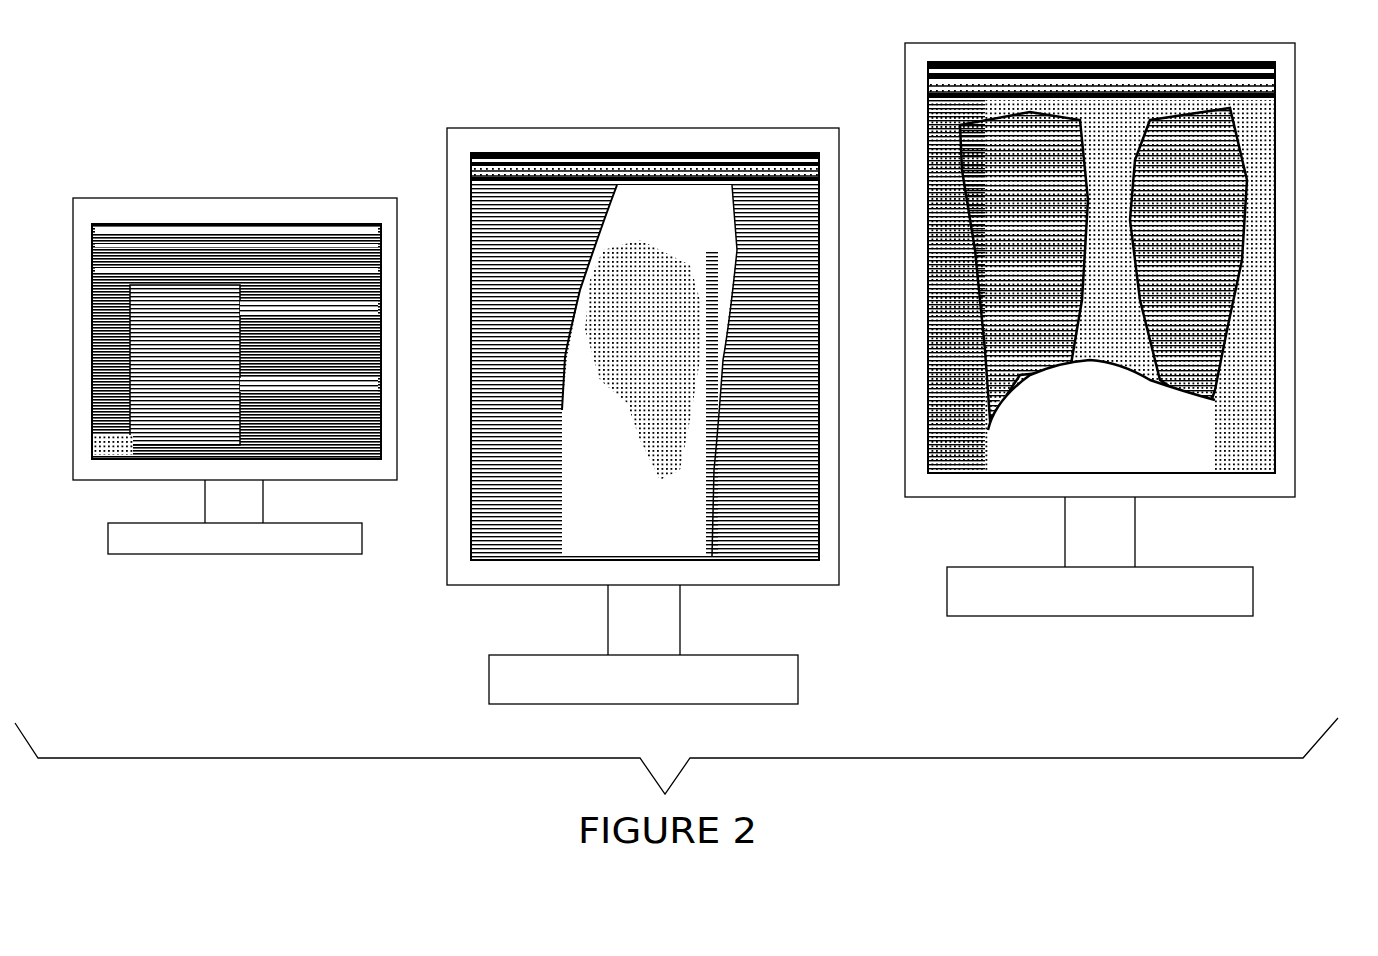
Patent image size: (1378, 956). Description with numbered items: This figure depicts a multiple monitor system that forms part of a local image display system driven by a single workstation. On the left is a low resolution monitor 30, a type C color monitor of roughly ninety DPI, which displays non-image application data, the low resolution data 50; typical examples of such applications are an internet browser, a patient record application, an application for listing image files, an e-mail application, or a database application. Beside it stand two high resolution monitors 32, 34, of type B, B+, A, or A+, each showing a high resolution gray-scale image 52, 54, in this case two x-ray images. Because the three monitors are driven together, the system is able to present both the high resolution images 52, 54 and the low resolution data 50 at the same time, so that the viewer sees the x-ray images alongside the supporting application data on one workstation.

The low resolution monitor 30 is at (218, 373).
The high resolution monitor 32 is at (597, 383).
The high resolution monitor 34 is at (1132, 329).
The low resolution data 50 is at (131, 216).
The high resolution gray-scale image 52 is at (749, 148).
The high resolution gray-scale image 54 is at (1290, 80).